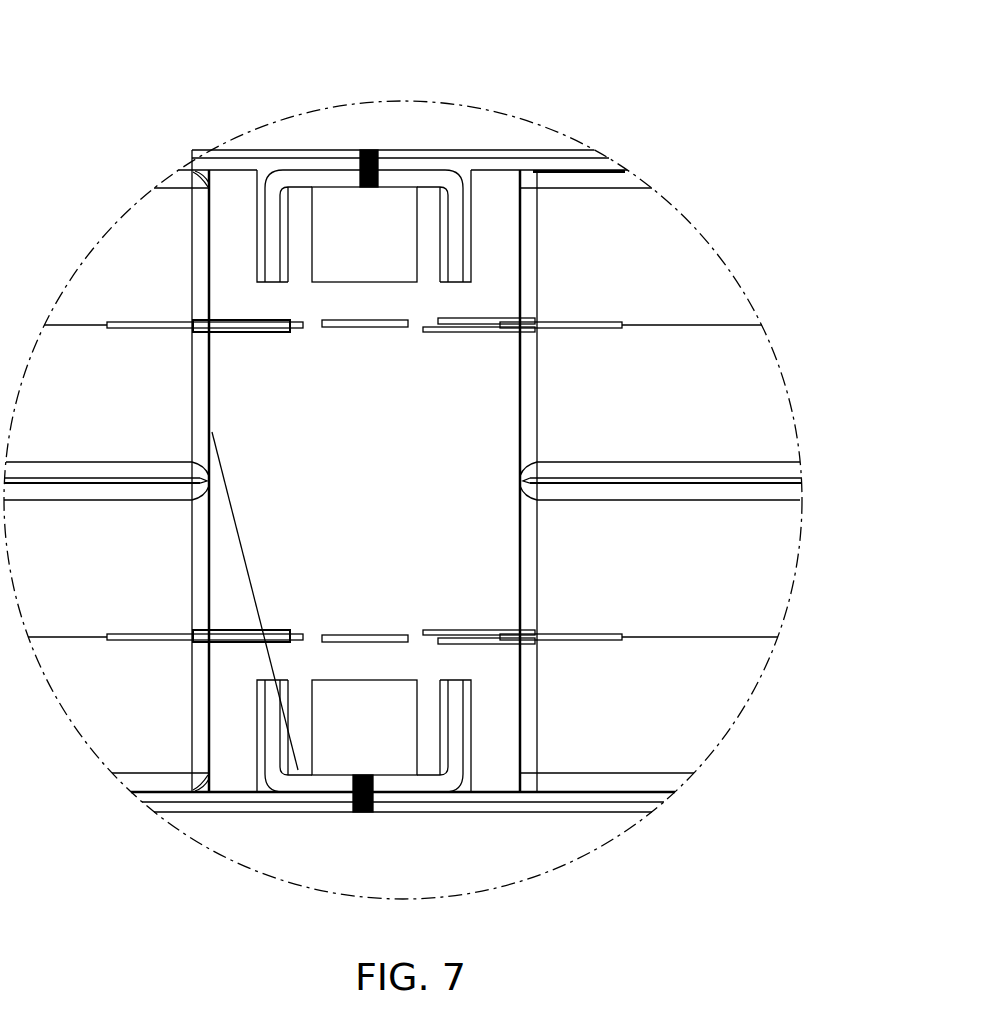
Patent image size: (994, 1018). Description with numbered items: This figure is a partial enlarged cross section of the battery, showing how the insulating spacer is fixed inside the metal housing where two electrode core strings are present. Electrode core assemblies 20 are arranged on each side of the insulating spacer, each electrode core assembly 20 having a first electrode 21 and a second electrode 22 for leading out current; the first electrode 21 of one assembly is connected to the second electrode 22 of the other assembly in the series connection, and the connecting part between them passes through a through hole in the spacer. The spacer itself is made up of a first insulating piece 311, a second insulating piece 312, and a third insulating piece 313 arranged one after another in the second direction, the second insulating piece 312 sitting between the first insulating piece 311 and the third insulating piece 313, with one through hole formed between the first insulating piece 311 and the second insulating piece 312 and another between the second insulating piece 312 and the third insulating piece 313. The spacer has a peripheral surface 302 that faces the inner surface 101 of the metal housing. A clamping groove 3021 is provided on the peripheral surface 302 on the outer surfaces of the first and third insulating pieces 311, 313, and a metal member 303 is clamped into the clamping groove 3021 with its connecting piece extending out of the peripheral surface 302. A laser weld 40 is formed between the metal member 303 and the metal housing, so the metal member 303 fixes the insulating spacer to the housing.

The electrode core assembly 20 is at (147, 283).
The first electrode 21 is at (252, 323).
The second electrode 22 is at (418, 323).
The laser weld 40 is at (365, 148).
The inner surface 101 is at (464, 160).
The peripheral surface 302 is at (308, 178).
The clamping groove 3021 is at (282, 237).
The metal member 303 is at (393, 178).
The first insulating piece 311 is at (497, 285).
The second insulating piece 312 is at (473, 430).
The third insulating piece 313 is at (496, 722).